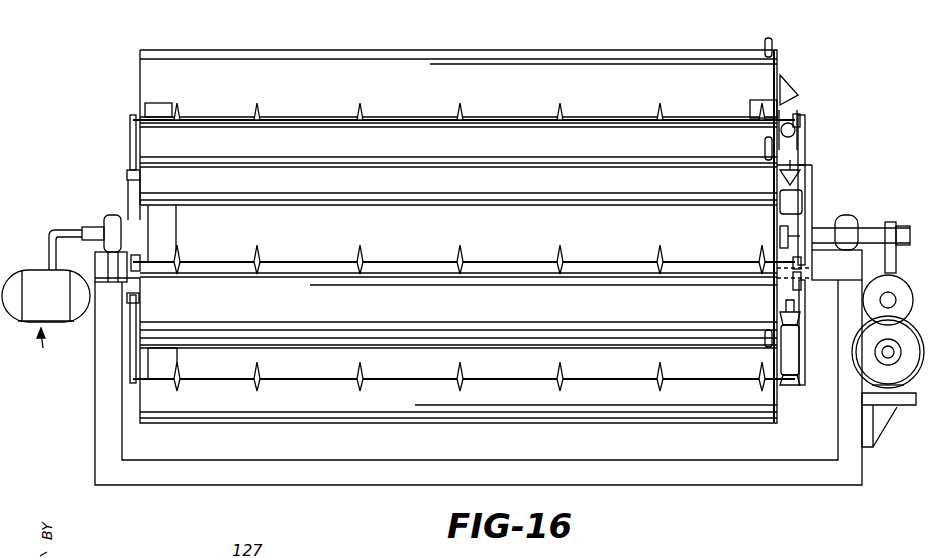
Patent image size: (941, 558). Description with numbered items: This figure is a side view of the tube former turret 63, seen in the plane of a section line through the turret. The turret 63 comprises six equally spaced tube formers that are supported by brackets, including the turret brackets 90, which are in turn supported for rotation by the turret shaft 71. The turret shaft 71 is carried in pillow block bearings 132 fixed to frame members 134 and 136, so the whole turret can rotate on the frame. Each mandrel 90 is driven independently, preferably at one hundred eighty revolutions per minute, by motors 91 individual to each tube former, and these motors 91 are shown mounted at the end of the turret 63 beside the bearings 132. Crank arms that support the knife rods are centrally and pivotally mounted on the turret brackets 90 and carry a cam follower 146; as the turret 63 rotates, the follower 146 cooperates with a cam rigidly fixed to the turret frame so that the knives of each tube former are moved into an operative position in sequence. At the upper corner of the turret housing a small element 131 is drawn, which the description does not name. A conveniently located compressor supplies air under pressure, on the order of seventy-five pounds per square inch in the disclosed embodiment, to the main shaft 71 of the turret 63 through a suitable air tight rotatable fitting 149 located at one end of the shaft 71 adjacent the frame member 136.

The tube former turret 63 is at (366, 40).
The turret shaft 71 is at (102, 220).
The turret bracket 90 is at (172, 225).
The motor 91 is at (797, 195).
The sensor pin 131 is at (772, 38).
The pillow block bearing 132 is at (848, 224).
The frame member 134 is at (838, 426).
The frame member 136 is at (104, 377).
The cam follower 146 is at (813, 280).
The rotatable fitting 149 is at (82, 232).